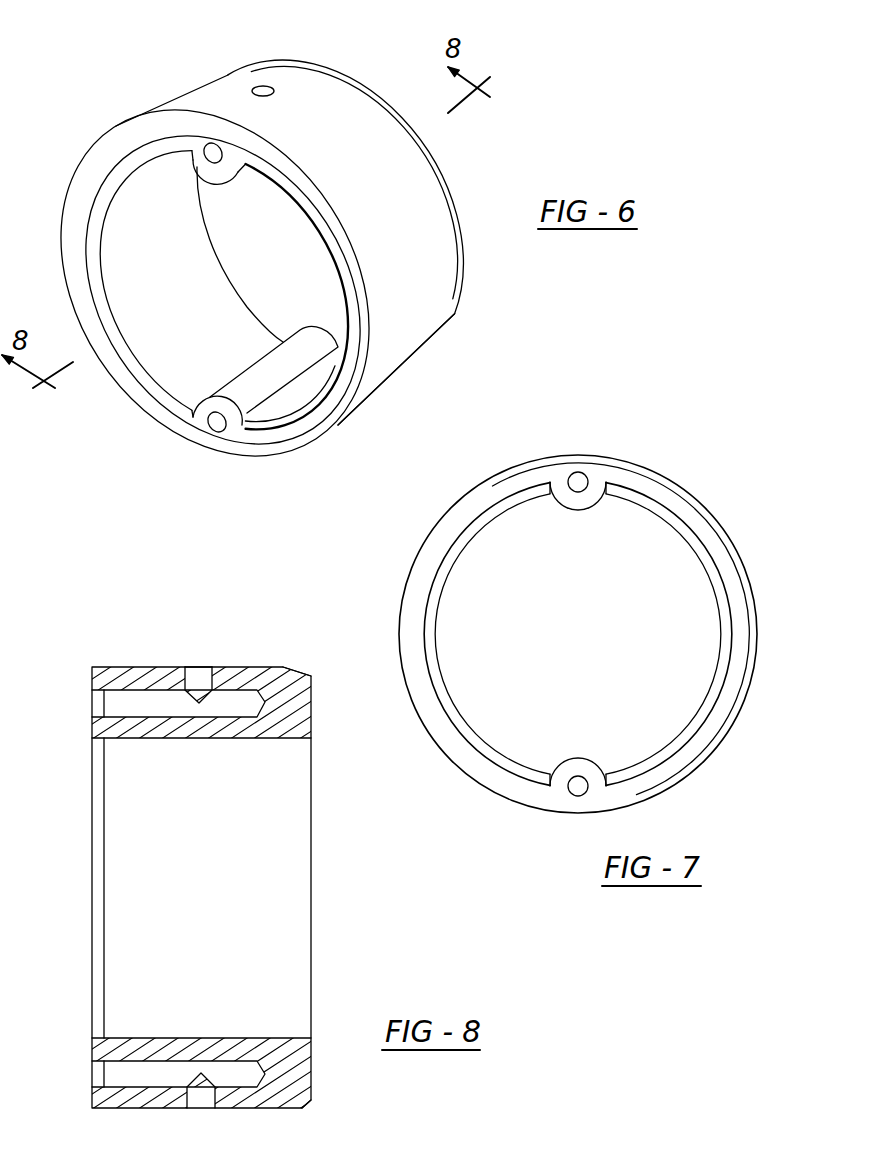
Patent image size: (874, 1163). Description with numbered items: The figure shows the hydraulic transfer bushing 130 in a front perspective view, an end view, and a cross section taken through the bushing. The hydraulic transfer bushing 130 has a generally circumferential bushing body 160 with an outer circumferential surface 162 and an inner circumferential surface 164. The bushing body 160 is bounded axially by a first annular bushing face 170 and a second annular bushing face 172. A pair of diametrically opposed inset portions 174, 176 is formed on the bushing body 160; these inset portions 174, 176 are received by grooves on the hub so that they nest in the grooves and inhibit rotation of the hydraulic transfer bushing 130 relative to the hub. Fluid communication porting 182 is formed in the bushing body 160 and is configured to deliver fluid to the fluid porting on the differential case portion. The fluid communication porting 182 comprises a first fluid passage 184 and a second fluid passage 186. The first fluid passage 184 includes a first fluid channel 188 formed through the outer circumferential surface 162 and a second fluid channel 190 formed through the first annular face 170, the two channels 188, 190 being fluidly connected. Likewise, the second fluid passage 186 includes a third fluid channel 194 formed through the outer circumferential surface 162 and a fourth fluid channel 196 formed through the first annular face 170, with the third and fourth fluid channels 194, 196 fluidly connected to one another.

In FIG. 6, the hydraulic transfer bushing 130 is at (517, 60).
In FIG. 7, the hydraulic transfer bushing 130 is at (690, 440).
In FIG. 8, the hydraulic transfer bushing 130 is at (78, 760).
In FIG. 6, the bushing body 160 is at (407, 190).
In FIG. 7, the bushing body 160 is at (705, 492).
In FIG. 6, the outer circumferential surface 162 is at (410, 290).
In FIG. 7, the outer circumferential surface 162 is at (745, 712).
In FIG. 8, the outer circumferential surface 162 is at (268, 1110).
In FIG. 6, the inner circumferential surface 164 is at (152, 303).
In FIG. 7, the inner circumferential surface 164 is at (684, 603).
In FIG. 8, the inner circumferential surface 164 is at (270, 742).
In FIG. 6, the first annular bushing face 170 is at (90, 182).
In FIG. 7, the first annular bushing face 170 is at (470, 500).
In FIG. 8, the first annular bushing face 170 is at (85, 678).
In FIG. 8, the second annular bushing face 172 is at (318, 690).
In FIG. 6, the inset portion 174 is at (220, 180).
In FIG. 7, the inset portion 174 is at (577, 512).
In FIG. 6, the inset portion 176 is at (260, 383).
In FIG. 7, the inset portion 176 is at (580, 758).
In FIG. 6, the fluid communication porting 182 is at (236, 62).
In FIG. 8, the fluid communication porting 182 is at (203, 645).
In FIG. 6, the first fluid passage 184 is at (211, 145).
In FIG. 7, the first fluid passage 184 is at (577, 470).
In FIG. 8, the first fluid passage 184 is at (133, 696).
In FIG. 6, the second fluid passage 186 is at (215, 428).
In FIG. 7, the second fluid passage 186 is at (580, 790).
In FIG. 8, the second fluid passage 186 is at (157, 1085).
In FIG. 6, the first fluid channel 188 is at (267, 87).
In FIG. 8, the first fluid channel 188 is at (213, 680).
In FIG. 8, the second fluid channel 190 is at (147, 710).
In FIG. 8, the third fluid channel 194 is at (200, 1097).
In FIG. 8, the fourth fluid channel 196 is at (112, 1060).